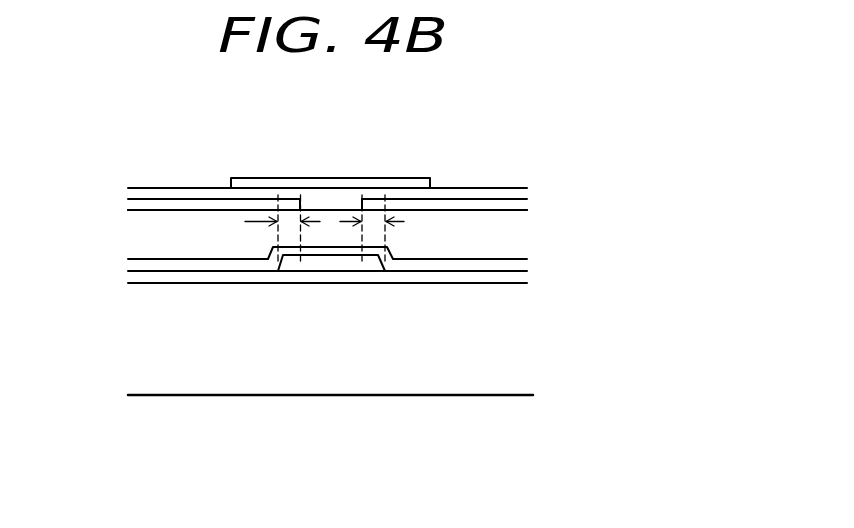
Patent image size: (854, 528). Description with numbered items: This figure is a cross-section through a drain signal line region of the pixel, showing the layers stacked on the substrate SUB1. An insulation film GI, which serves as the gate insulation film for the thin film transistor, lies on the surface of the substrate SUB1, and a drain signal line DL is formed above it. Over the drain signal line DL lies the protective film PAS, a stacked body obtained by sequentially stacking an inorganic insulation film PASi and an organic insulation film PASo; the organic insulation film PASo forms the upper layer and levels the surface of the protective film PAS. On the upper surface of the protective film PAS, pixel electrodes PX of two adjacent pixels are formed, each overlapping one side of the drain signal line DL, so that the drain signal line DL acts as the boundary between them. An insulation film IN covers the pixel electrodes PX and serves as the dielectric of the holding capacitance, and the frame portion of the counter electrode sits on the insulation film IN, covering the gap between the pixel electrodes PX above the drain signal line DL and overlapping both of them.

The pixel electrode PX is at (195, 198).
The insulation film IN is at (513, 192).
The organic insulation film PASo is at (495, 228).
The inorganic insulation film PASi is at (517, 267).
The protective film PAS is at (648, 205).
The drain signal line DL is at (340, 263).
The insulation film GI is at (463, 280).
The substrate SUB1 is at (213, 377).